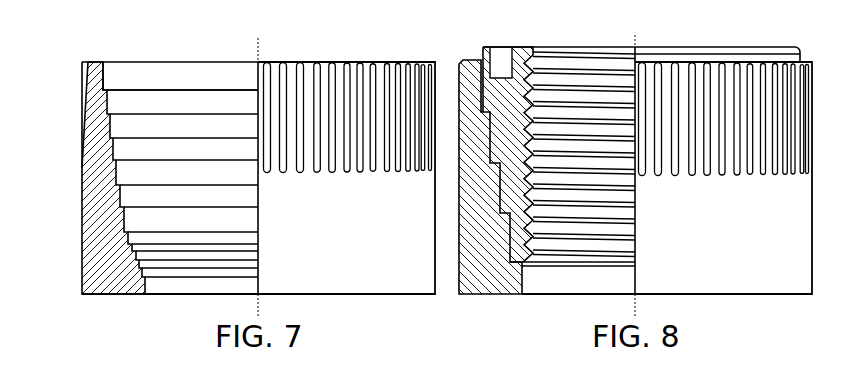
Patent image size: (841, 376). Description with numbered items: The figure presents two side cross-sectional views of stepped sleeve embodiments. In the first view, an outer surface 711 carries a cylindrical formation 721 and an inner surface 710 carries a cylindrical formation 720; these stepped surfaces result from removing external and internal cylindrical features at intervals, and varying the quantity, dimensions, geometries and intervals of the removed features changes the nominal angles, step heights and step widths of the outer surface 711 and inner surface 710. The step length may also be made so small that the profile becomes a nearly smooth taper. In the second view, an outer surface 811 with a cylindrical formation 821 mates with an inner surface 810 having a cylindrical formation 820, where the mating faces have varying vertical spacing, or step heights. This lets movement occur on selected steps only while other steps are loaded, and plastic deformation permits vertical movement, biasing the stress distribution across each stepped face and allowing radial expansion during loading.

In FIG. 7, the inner surface 710 is at (197, 176).
In FIG. 7, the cylindrical formation 720 is at (197, 176).
In FIG. 7, the outer surface 711 is at (170, 98).
In FIG. 7, the cylindrical formation 721 is at (103, 80).
In FIG. 8, the inner surface 810 is at (496, 176).
In FIG. 8, the cylindrical formation 820 is at (496, 176).
In FIG. 8, the outer surface 811 is at (541, 145).
In FIG. 8, the cylindrical formation 821 is at (483, 72).